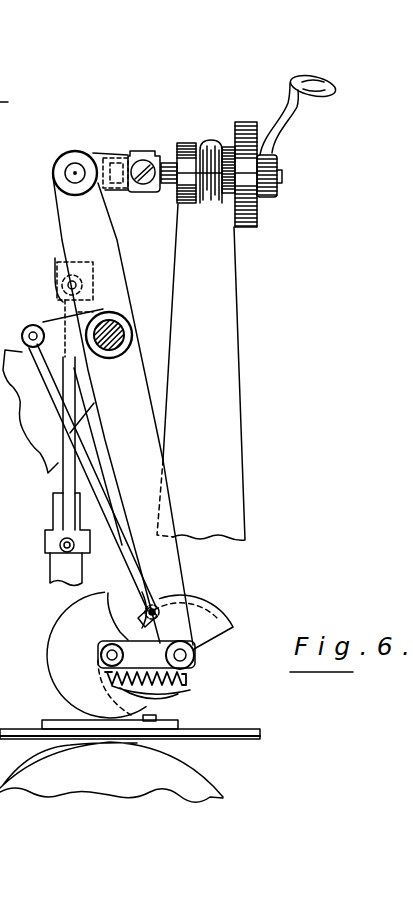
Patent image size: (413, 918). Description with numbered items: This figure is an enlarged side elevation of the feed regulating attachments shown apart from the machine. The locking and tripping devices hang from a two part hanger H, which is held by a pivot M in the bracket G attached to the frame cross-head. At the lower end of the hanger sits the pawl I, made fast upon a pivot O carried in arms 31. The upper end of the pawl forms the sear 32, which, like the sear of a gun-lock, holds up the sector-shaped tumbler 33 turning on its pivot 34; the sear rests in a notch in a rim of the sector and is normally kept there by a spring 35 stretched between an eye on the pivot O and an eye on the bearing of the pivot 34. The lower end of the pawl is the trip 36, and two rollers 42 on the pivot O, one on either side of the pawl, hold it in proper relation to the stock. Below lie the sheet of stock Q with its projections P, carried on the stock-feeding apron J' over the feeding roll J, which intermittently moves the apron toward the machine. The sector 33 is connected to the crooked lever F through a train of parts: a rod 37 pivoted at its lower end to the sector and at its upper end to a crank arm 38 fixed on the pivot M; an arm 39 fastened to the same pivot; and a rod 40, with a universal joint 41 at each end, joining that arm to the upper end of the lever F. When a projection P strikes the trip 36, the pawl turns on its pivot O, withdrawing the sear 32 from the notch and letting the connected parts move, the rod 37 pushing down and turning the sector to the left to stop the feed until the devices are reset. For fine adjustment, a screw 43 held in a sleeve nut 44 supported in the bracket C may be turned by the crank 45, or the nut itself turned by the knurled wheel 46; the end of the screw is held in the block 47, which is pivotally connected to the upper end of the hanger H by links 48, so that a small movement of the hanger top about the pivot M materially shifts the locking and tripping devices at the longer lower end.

The arms 31 is at (146, 654).
The sear 32 is at (146, 612).
The sector-shaped tumbler 33 is at (205, 618).
The pivot 34 is at (195, 657).
The spring 35 is at (183, 684).
The trip 36 is at (196, 691).
The rod 37 is at (98, 488).
The crank arm 38 is at (31, 325).
The arm 39 is at (92, 298).
The rod 40 is at (62, 480).
The universal joint 41 is at (55, 271).
The rollers 42 is at (65, 688).
The screw 43 is at (150, 150).
The sleeve nut 44 is at (178, 145).
The crank 45 is at (280, 138).
The knurled wheel 46 is at (250, 116).
The block 47 is at (137, 152).
The links 48 is at (95, 157).
The bracket C is at (201, 372).
The two part hanger H is at (106, 226).
The pivot M is at (122, 322).
The bracket G is at (32, 443).
The crooked lever F is at (78, 569).
The pawl I is at (118, 633).
The pivot O is at (102, 648).
The projections P is at (160, 718).
The sheet of stock Q is at (180, 725).
The feeding roll J is at (111, 772).
The stock-feeding apron J' is at (251, 757).